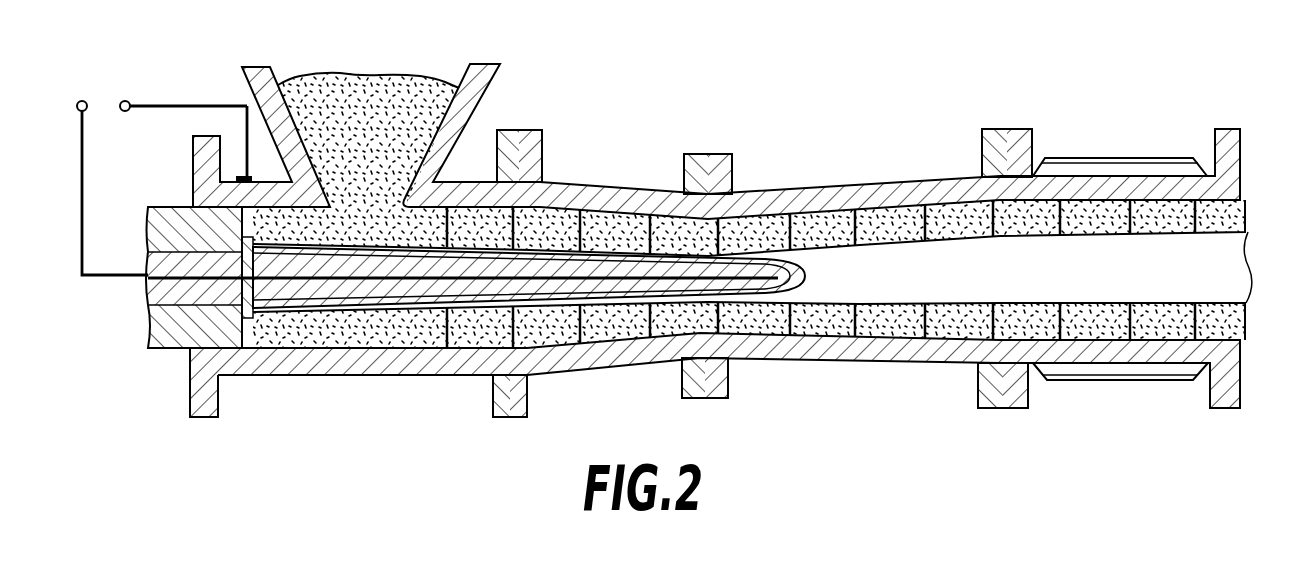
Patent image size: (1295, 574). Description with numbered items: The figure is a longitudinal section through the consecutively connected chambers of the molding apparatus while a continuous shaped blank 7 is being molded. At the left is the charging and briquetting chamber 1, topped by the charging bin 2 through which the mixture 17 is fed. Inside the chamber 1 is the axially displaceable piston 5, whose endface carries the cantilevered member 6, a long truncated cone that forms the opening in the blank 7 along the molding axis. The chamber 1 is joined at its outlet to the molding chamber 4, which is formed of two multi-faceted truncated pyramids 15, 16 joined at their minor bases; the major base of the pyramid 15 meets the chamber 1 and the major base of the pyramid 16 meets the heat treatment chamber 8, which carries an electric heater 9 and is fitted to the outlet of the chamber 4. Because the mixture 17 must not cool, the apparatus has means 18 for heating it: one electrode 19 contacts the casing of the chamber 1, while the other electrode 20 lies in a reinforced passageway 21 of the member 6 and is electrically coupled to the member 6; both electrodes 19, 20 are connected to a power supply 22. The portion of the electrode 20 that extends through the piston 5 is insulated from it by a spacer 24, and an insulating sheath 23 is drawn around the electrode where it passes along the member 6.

The charging and briquetting chamber 1 is at (255, 363).
The charging bin 2 is at (480, 90).
The molding chamber 4 is at (703, 125).
The piston 5 is at (177, 350).
The cantilevered member 6 is at (780, 297).
The continuous shaped blank 7 is at (1240, 198).
The heat treatment chamber 8 is at (1073, 188).
The heater 9 is at (1125, 163).
The truncated pyramid 15 is at (596, 182).
The truncated pyramid 16 is at (785, 187).
The mixture 17 is at (380, 80).
The means for heating the mixture 18 is at (173, 93).
The electrode 19 is at (176, 112).
The electrode 20 is at (82, 223).
The passageway 21 is at (647, 337).
The power supply 22 is at (110, 100).
The insulating sheath 23 is at (250, 317).
The spacer 24 is at (160, 293).